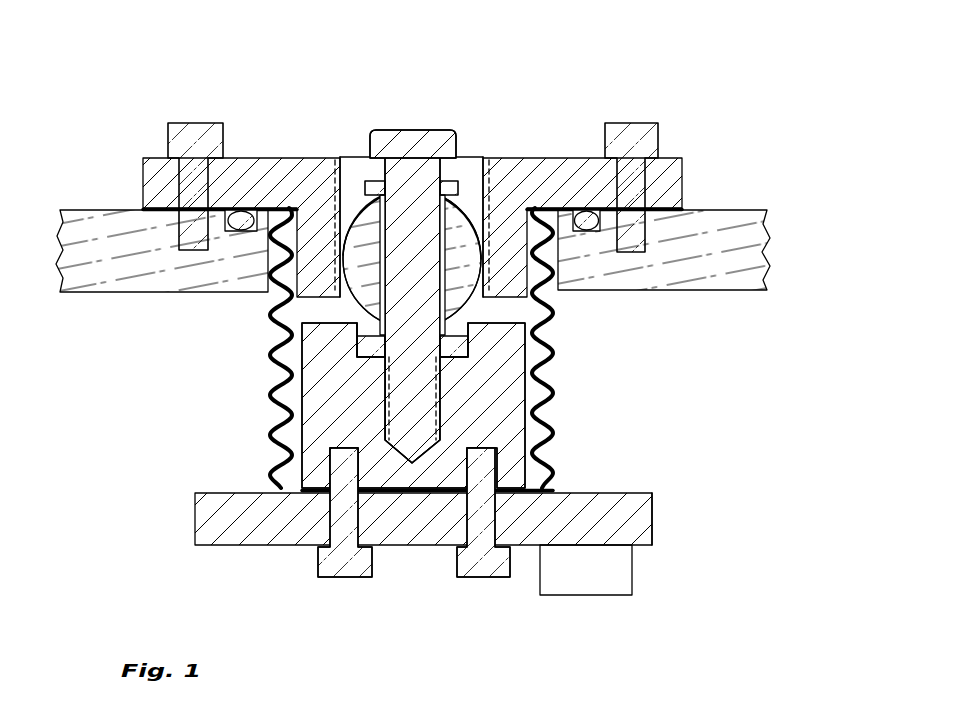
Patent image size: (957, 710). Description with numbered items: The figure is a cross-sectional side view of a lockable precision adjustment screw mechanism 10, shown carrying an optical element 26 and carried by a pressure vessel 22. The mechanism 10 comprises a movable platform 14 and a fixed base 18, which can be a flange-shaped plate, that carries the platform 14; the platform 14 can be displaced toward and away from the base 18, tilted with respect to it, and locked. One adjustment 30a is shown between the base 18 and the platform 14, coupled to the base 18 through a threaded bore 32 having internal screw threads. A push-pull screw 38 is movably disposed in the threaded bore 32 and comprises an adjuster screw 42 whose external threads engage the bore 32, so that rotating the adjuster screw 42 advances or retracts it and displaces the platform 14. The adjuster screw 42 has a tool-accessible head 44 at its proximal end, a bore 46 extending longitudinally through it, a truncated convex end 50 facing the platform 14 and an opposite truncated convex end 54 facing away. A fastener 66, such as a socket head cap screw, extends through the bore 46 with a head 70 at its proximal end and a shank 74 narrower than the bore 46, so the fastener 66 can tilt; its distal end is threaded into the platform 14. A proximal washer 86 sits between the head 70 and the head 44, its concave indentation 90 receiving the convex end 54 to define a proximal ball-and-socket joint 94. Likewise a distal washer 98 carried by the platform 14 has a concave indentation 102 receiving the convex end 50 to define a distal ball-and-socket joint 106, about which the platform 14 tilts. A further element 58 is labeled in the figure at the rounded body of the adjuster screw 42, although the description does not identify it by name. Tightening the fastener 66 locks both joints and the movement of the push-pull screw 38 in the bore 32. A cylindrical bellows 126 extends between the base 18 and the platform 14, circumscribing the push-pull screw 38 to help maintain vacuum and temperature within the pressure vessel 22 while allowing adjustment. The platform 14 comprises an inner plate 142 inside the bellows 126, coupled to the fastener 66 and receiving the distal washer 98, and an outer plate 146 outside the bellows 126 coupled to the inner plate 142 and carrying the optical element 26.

The lockable precision adjustment screw mechanism 10 is at (240, 567).
The movable platform 14 is at (662, 504).
The fixed base 18 is at (582, 165).
The pressure vessel 22 is at (728, 282).
The optical element 26 is at (588, 583).
The first adjustment 30a is at (491, 104).
The threaded bore 32 is at (352, 270).
The push-pull screw 38 is at (355, 155).
The adjuster screw 42 is at (348, 322).
The head 44 is at (352, 207).
The bore 46 is at (358, 333).
The truncated convex end 50 is at (363, 338).
The truncated convex end 54 is at (367, 190).
The ball 58 is at (468, 232).
The fastener 66 is at (393, 130).
The head 70 is at (437, 147).
The shank 74 is at (408, 408).
The proximal washer 86 is at (462, 187).
The concave indentation 90 is at (457, 187).
The proximal ball-and-socket joint 94 is at (475, 215).
The distal washer 98 is at (473, 343).
The concave indentation 102 is at (457, 343).
The distal ball-and-socket joint 106 is at (475, 333).
The bellows 126 is at (278, 450).
The inner plate 142 is at (425, 473).
The outer plate 146 is at (643, 527).